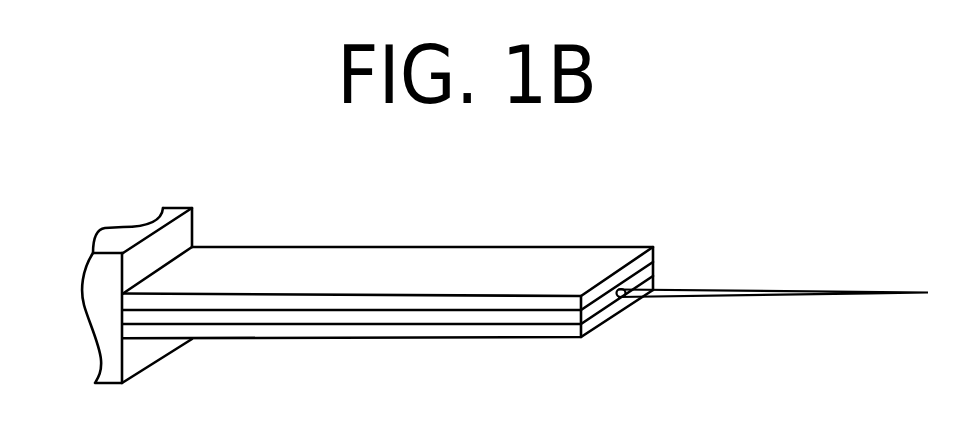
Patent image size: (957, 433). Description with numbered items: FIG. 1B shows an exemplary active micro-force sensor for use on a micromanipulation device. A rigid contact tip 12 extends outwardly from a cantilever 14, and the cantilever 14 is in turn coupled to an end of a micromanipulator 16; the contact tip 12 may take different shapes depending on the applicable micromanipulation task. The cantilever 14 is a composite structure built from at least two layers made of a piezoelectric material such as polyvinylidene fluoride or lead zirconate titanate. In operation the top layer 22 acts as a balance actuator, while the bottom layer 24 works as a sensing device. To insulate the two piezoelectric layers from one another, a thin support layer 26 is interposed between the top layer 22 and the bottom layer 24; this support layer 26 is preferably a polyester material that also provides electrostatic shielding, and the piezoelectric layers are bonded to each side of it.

The contact tip 12 is at (867, 292).
The cantilever 14 is at (327, 233).
The micromanipulator 16 is at (103, 228).
The top layer 22 is at (580, 260).
The bottom layer 24 is at (465, 330).
The support layer 26 is at (502, 317).